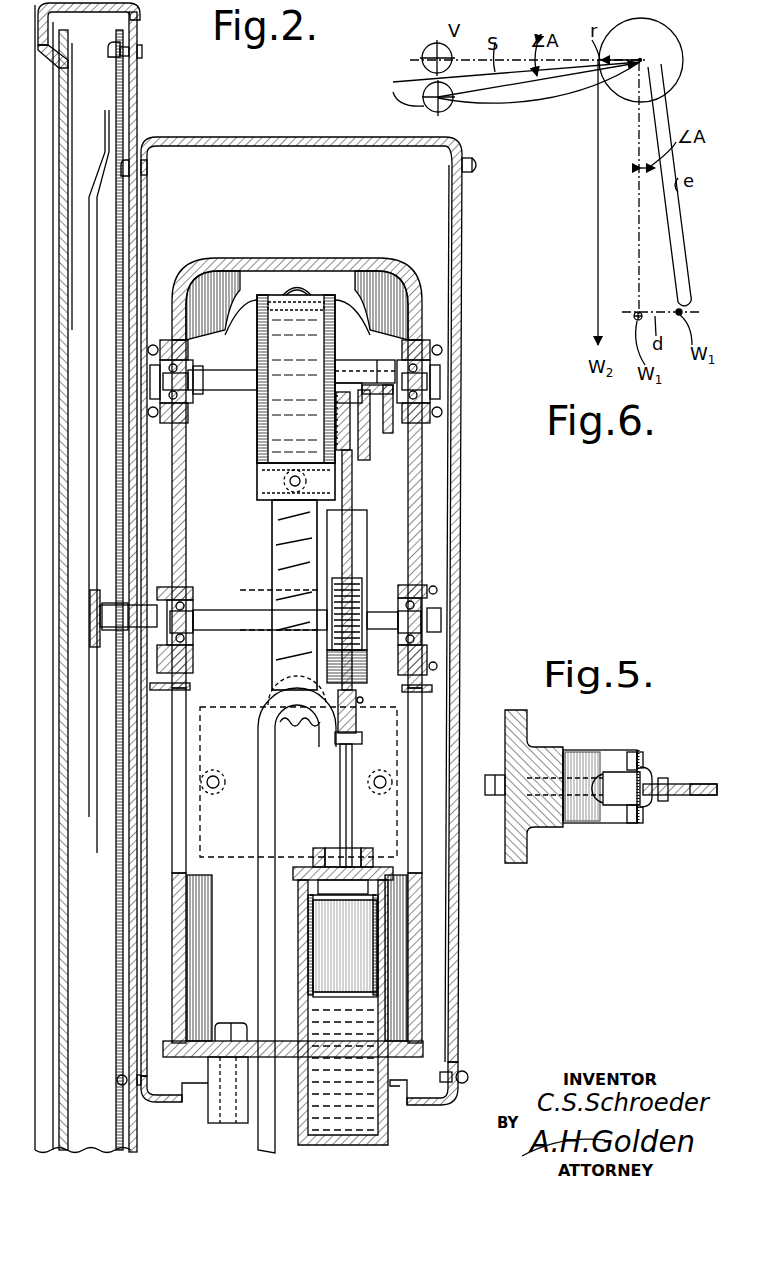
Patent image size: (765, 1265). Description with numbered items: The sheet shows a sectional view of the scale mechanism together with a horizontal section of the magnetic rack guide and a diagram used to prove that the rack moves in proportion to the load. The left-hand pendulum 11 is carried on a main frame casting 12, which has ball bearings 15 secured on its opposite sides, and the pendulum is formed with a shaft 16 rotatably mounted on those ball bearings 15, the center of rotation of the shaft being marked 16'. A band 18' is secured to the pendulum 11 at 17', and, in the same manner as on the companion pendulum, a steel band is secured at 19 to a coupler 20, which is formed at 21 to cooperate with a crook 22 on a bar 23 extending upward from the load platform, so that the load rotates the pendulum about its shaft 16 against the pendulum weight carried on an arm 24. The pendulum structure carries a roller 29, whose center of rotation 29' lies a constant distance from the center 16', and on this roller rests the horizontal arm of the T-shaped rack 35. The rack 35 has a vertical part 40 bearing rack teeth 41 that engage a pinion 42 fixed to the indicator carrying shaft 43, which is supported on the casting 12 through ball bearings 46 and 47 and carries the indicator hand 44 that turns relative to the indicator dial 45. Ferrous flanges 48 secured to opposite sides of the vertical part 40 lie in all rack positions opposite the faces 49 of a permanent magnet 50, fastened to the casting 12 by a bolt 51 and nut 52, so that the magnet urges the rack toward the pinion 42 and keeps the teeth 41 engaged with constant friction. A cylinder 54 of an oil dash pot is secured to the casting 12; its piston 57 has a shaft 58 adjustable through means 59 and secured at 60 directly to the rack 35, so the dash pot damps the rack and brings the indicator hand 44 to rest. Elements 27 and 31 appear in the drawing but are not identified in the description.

In FIG. 2, the left-hand pendulum 11 is at (347, 295).
In FIG. 2, the main frame casting 12 is at (425, 317).
In FIG. 5, the main frame casting 12 is at (510, 862).
In FIG. 2, the ball bearings 15 is at (190, 375).
In FIG. 2, the shaft 16 is at (291, 398).
In FIG. 6, the center of rotation 16' is at (652, 53).
In FIG. 2, the band securing point 17' is at (301, 256).
In FIG. 2, the band 18' is at (312, 268).
In FIG. 2, the securing point 19 is at (284, 481).
In FIG. 2, the coupler 20 is at (283, 516).
In FIG. 2, the coupler formation 21 is at (295, 726).
In FIG. 2, the crook 22 is at (272, 702).
In FIG. 2, the bar 23 is at (258, 840).
In FIG. 6, the arm 24 is at (668, 248).
In FIG. 2, the gear 27 is at (371, 444).
In FIG. 2, the roller 29 is at (418, 434).
In FIG. 6, the roller 29 is at (436, 81).
In FIG. 6, the center of rotation of roller 29' is at (500, 84).
In FIG. 2, the bracket 31 is at (394, 428).
In FIG. 2, the rack 35 is at (348, 540).
In FIG. 5, the rack 35 is at (665, 798).
In FIG. 5, the vertical part 40 is at (712, 784).
In FIG. 5, the rack teeth 41 is at (645, 770).
In FIG. 2, the pinion 42 is at (350, 592).
In FIG. 2, the shaft 43 is at (228, 610).
In FIG. 2, the indicator hand 44 is at (100, 227).
In FIG. 2, the indicator dial 45 is at (124, 88).
In FIG. 2, the ball bearing 46 is at (433, 633).
In FIG. 2, the ball bearing 47 is at (197, 637).
In FIG. 2, the flanges 48 is at (330, 666).
In FIG. 5, the flanges 48 is at (643, 755).
In FIG. 5, the faces 49 is at (630, 753).
In FIG. 5, the permanent magnet 50 is at (598, 812).
In FIG. 5, the bolt 51 is at (573, 800).
In FIG. 5, the nut 52 is at (493, 798).
In FIG. 2, the cylinder 54 is at (390, 953).
In FIG. 2, the piston 57 is at (368, 927).
In FIG. 2, the shaft 58 is at (338, 803).
In FIG. 2, the adjusting means 59 is at (360, 738).
In FIG. 2, the securing point 60 is at (358, 697).